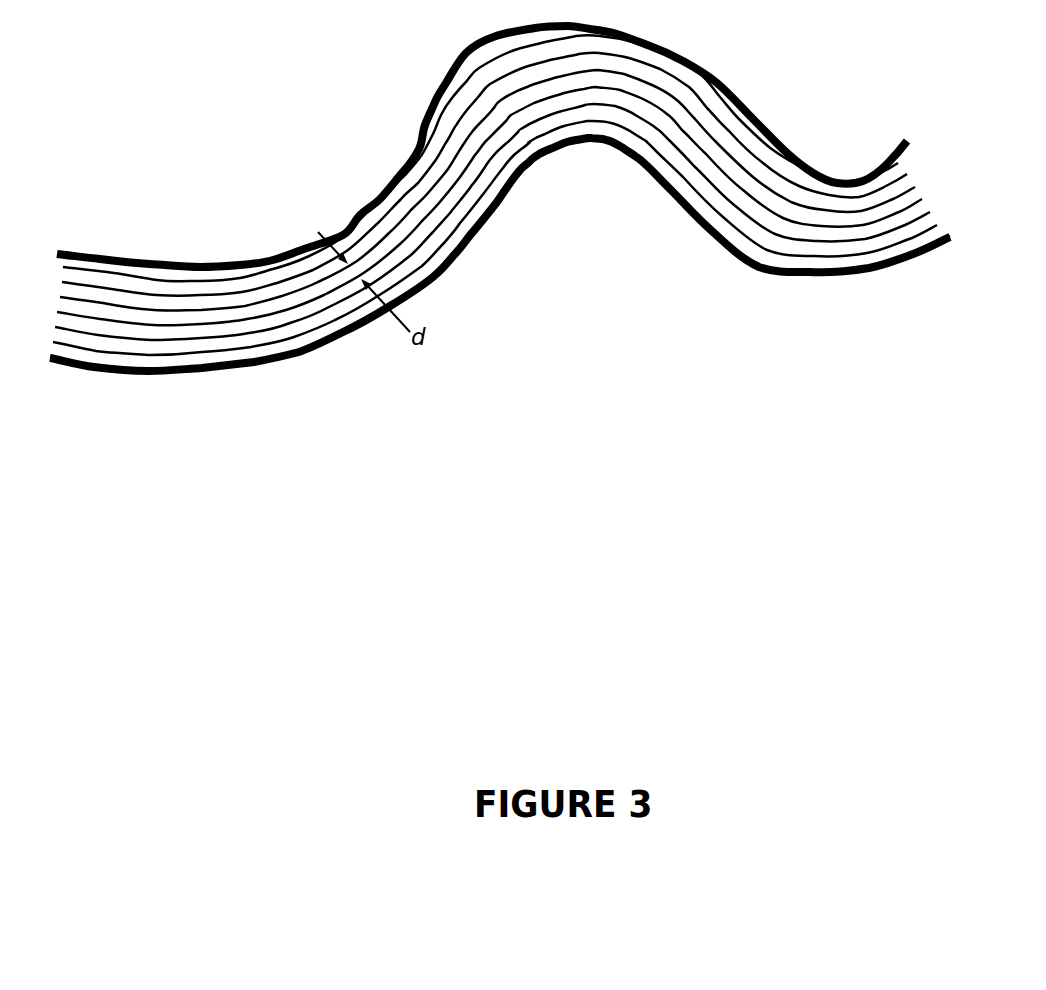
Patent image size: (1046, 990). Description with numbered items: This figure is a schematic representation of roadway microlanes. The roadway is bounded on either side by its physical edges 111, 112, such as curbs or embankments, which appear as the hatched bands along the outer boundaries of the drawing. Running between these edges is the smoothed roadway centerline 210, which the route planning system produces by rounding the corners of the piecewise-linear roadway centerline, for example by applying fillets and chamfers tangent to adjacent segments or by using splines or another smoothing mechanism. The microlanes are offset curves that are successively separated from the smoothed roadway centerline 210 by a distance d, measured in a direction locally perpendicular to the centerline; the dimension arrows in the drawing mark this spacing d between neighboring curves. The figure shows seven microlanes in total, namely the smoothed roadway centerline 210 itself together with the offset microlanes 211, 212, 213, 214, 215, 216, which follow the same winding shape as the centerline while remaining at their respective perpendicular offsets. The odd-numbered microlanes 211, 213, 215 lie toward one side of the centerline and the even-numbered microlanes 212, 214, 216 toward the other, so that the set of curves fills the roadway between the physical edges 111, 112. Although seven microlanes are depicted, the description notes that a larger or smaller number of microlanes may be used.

The physical edge 111 is at (802, 274).
The physical edge 112 is at (720, 80).
The smoothed roadway centerline 210 is at (495, 195).
The microlane 211 is at (452, 138).
The microlane 212 is at (730, 210).
The microlane 213 is at (422, 167).
The microlane 214 is at (747, 246).
The microlane 215 is at (375, 196).
The microlane 216 is at (800, 272).